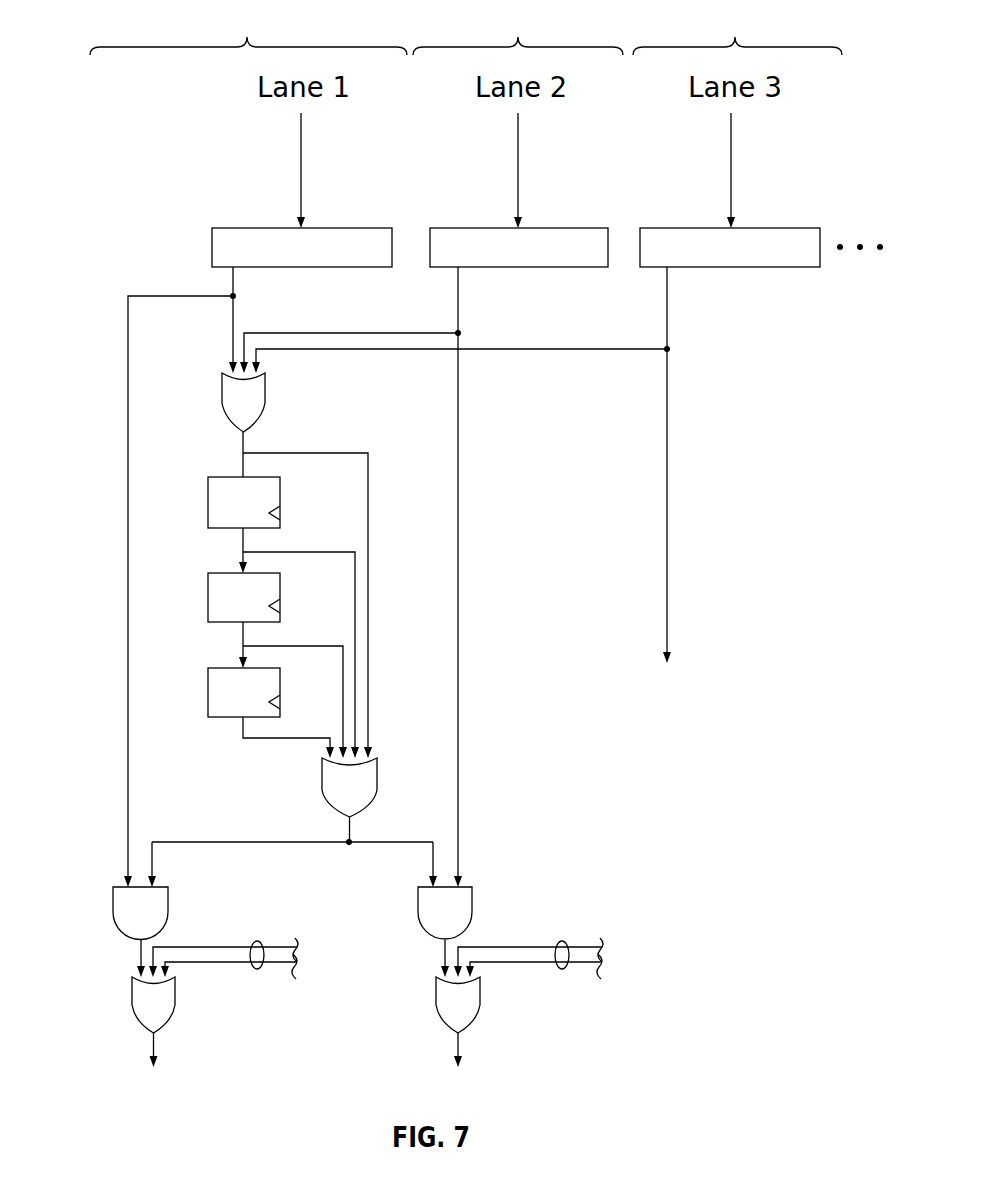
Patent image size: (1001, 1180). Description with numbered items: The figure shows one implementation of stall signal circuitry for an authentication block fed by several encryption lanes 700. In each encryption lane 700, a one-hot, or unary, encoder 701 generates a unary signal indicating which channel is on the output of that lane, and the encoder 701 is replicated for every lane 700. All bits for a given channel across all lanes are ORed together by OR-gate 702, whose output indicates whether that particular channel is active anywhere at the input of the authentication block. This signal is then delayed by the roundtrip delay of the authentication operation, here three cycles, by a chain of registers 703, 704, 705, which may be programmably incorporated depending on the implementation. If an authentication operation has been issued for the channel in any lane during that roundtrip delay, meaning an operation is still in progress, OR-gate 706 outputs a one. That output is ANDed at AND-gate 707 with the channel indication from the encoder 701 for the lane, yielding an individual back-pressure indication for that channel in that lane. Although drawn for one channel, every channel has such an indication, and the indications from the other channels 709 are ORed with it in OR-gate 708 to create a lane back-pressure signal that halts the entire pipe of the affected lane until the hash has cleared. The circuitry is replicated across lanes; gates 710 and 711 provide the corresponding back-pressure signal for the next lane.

The encryption lane 700 is at (466, 31).
The one-hot encoder 701 is at (278, 226).
The OR-gate 702 is at (266, 392).
The register 703 is at (282, 500).
The register 704 is at (208, 600).
The register 705 is at (208, 695).
The OR-gate 706 is at (322, 790).
The AND-gate 707 is at (168, 905).
The OR-gate 708 is at (175, 1003).
The back-pressure indications from other channels 709 is at (257, 941).
The AND-gate 710 is at (472, 905).
The OR-gate 711 is at (480, 1003).